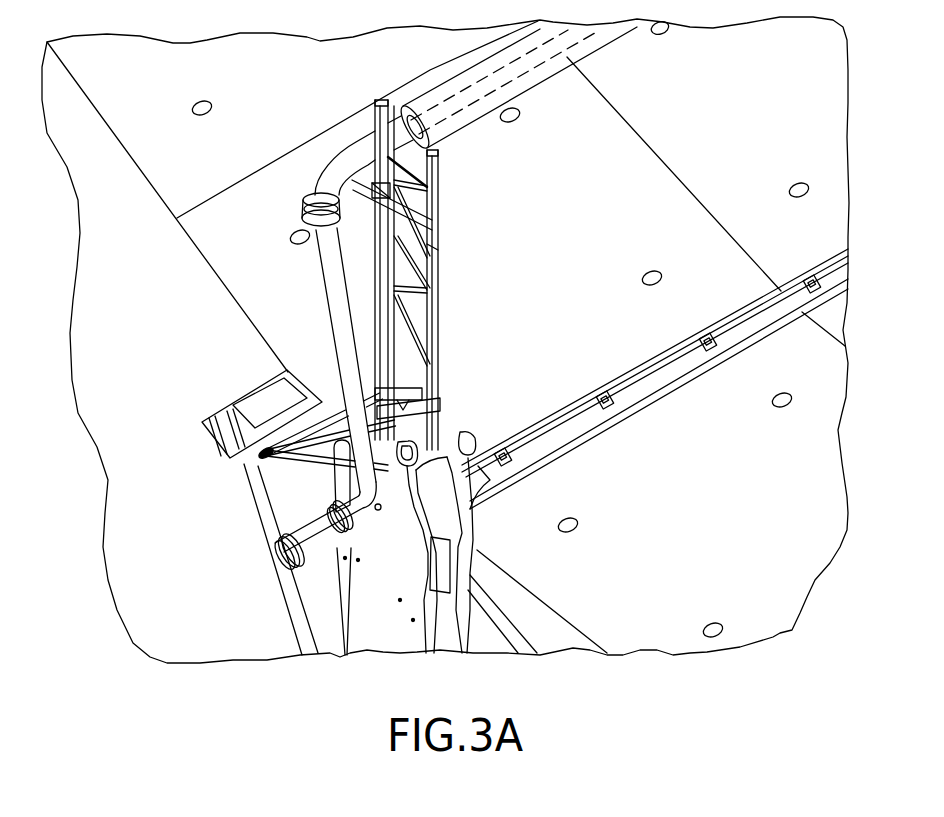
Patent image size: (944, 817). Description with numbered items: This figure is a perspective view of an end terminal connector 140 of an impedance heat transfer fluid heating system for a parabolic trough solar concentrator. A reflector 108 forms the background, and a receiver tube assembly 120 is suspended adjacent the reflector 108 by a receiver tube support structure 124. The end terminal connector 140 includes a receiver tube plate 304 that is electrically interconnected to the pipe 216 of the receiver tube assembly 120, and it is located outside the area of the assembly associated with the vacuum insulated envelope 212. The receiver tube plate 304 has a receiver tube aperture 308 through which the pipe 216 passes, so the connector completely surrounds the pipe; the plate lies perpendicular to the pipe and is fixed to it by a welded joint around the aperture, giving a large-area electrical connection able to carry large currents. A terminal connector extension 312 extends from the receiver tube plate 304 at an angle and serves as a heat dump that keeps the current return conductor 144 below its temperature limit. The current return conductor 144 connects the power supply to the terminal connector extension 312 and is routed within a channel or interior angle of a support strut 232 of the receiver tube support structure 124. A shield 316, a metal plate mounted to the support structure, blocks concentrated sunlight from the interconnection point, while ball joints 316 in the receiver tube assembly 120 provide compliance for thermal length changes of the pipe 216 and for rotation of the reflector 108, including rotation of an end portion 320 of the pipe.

The reflector 108 is at (158, 196).
The receiver tube assembly 120 is at (545, 78).
The receiver tube support structure 124 is at (395, 332).
The end terminal connector 140 is at (361, 212).
The current return conductor 144 is at (400, 200).
The vacuum insulated envelope 212 is at (431, 90).
The pipe 216 is at (320, 157).
The support strut 232 is at (440, 350).
The receiver tube plate 304 is at (300, 212).
The receiver tube aperture 308 is at (300, 193).
The terminal connector extension 312 is at (377, 188).
The shield 316 is at (321, 231).
The end or portion of the pipe 320 is at (276, 563).